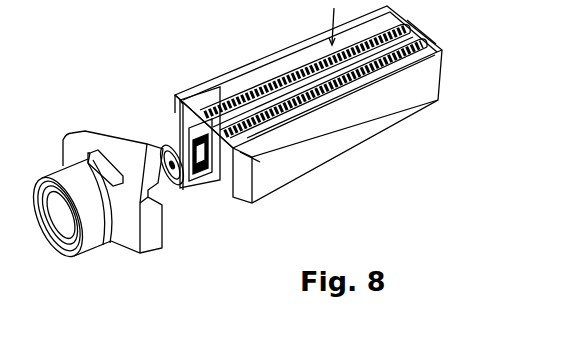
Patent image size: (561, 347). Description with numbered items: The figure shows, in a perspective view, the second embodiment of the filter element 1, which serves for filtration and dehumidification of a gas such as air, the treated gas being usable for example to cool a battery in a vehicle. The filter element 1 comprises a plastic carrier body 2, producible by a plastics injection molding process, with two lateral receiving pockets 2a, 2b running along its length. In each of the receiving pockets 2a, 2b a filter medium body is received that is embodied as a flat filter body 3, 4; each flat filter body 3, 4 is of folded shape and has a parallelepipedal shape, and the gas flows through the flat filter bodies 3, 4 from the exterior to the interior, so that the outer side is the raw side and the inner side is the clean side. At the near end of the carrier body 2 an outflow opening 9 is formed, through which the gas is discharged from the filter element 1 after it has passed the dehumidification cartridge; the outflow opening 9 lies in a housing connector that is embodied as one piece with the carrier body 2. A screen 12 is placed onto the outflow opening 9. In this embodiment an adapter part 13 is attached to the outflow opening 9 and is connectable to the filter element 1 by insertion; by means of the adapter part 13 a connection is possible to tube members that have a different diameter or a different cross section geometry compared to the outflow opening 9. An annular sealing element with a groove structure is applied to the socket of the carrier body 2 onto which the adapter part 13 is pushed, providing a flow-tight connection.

The filter element 1 is at (265, 32).
The carrier body 2 is at (128, 4).
The lateral receiving pocket 2a is at (296, 58).
The lateral receiving pocket 2b is at (310, 103).
The flat filter body 3 is at (232, 77).
The flat filter body 4 is at (287, 175).
The outflow opening 9 is at (195, 178).
The screen 12 is at (170, 146).
The adapter part 13 is at (103, 237).